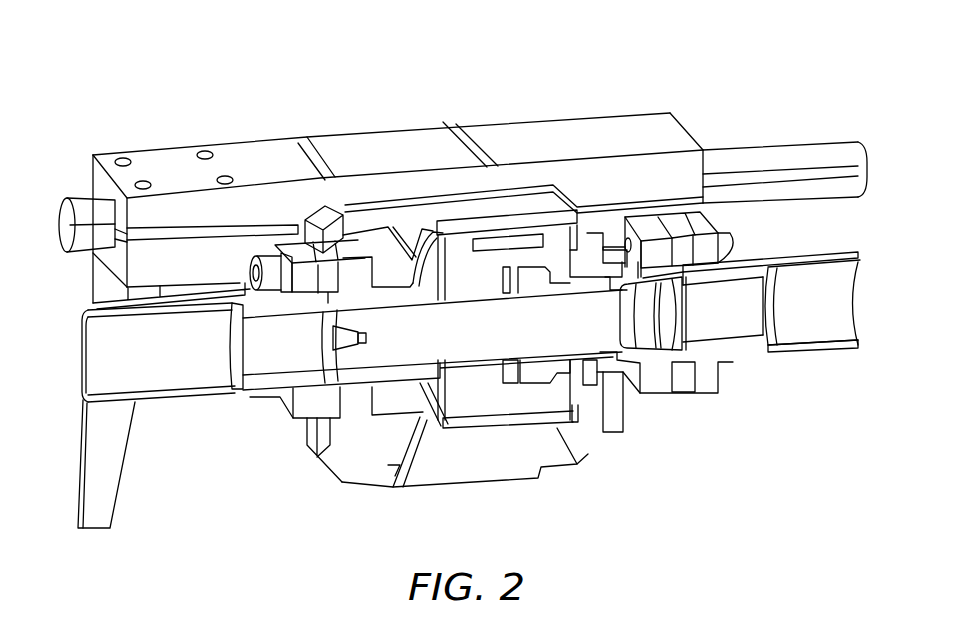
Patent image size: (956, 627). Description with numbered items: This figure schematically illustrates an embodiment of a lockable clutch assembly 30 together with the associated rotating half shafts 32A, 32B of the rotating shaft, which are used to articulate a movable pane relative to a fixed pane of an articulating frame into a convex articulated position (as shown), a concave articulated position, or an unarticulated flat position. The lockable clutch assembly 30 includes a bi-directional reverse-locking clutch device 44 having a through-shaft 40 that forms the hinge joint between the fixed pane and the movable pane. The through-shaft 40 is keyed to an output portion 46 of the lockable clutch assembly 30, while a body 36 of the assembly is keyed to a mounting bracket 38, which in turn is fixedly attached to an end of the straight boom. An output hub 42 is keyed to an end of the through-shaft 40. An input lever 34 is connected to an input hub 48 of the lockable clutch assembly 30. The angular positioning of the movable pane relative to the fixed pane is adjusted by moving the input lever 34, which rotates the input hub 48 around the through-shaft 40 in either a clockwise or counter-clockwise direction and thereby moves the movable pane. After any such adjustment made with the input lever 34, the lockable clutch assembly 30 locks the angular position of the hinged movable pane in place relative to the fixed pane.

The lockable clutch assembly 30 is at (659, 92).
The rotating half shaft 32A is at (96, 357).
The rotating half shaft 32B is at (805, 352).
The input lever 34 is at (628, 411).
The body 36 is at (529, 228).
The mounting bracket 38 is at (468, 210).
The through-shaft 40 is at (350, 370).
The output hub 42 is at (350, 418).
The bi-directional reverse-locking clutch device 44 is at (466, 409).
The output portion 46 is at (485, 370).
The input hub 48 is at (590, 370).